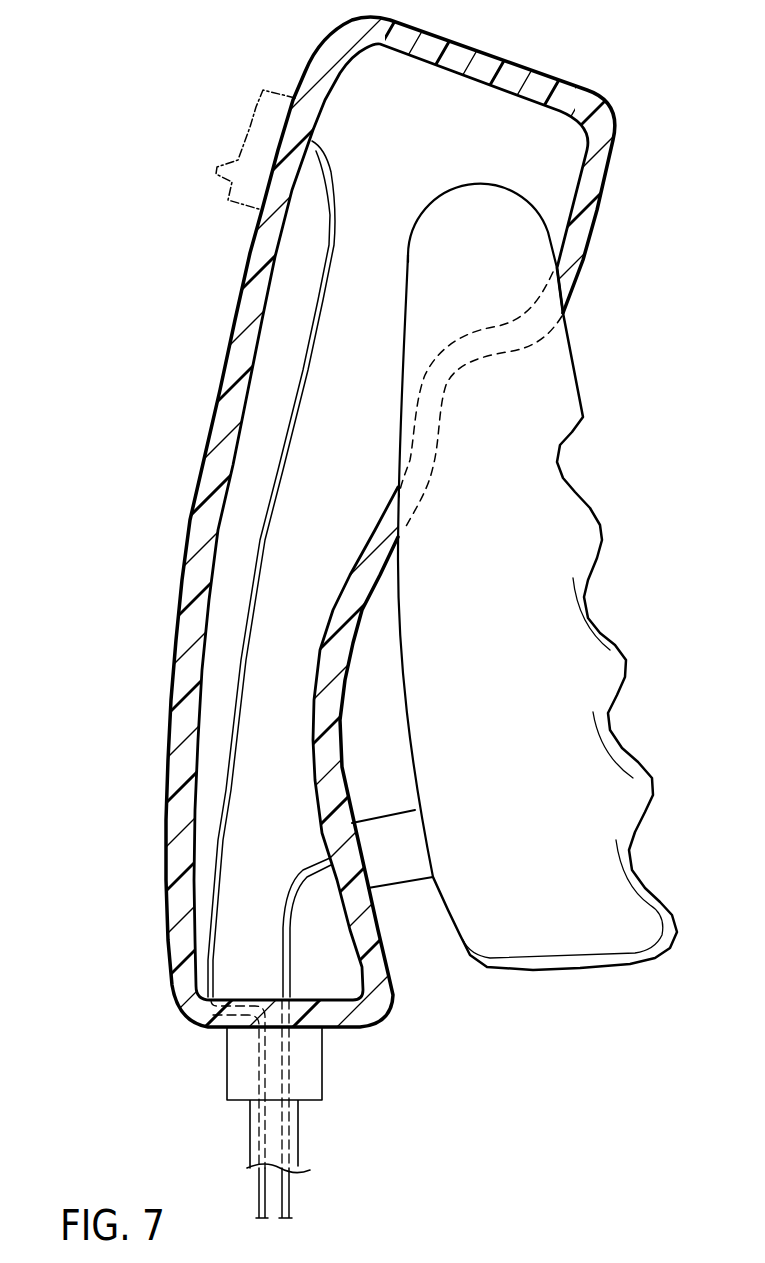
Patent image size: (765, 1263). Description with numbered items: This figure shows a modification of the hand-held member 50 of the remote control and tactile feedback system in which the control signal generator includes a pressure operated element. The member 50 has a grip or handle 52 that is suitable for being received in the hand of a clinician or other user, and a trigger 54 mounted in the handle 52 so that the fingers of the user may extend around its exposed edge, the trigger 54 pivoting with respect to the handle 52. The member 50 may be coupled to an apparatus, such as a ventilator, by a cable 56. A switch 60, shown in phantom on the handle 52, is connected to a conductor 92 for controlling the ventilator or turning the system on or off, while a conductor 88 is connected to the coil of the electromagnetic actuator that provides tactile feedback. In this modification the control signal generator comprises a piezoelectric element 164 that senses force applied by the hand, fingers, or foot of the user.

The member 50 is at (226, 236).
The handle 52 is at (178, 627).
The trigger 54 is at (573, 490).
The cable 56 is at (298, 1135).
The switch 60 is at (258, 108).
The conductor 88 is at (290, 897).
The conductor 92 is at (328, 172).
The piezoelectric element 164 is at (407, 868).